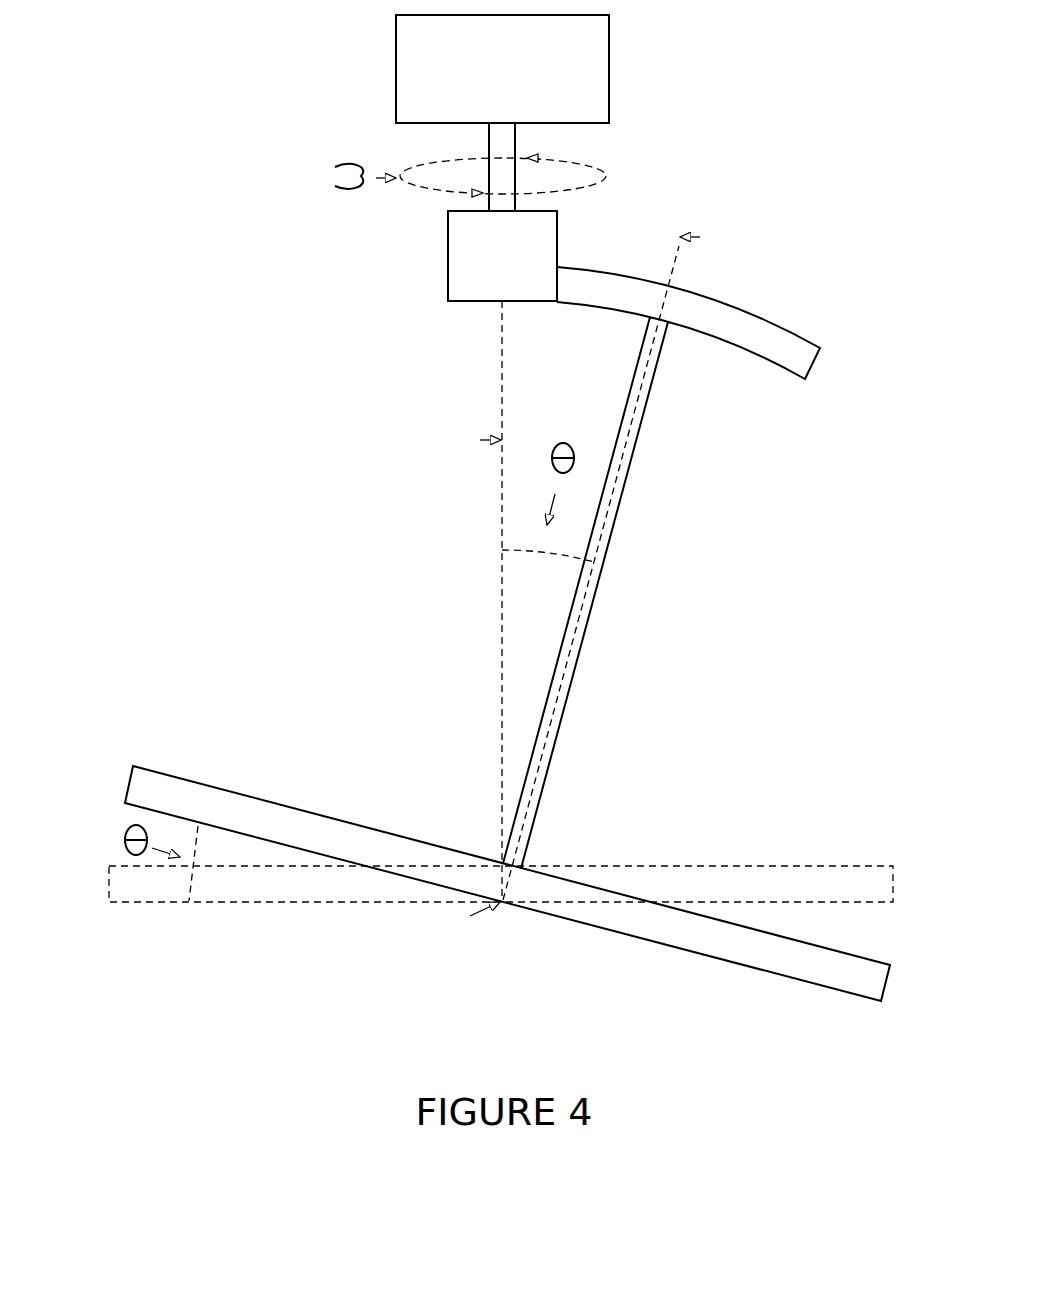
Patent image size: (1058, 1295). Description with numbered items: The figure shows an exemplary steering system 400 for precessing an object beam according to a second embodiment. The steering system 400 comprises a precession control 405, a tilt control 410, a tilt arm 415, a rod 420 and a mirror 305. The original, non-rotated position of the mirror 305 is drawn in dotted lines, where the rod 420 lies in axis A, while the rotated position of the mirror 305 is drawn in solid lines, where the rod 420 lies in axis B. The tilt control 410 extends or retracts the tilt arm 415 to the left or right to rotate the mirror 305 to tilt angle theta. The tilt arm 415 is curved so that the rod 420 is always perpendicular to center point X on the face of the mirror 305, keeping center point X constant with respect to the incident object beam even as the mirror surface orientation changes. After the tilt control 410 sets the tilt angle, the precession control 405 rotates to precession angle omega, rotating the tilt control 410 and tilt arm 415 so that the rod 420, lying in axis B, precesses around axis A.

The steering system 400 is at (152, 1003).
The precession control 405 is at (610, 15).
The tilt control 410 is at (559, 229).
The tilt arm 415 is at (752, 315).
The rod 420 is at (628, 475).
The mirror 305 is at (127, 786).